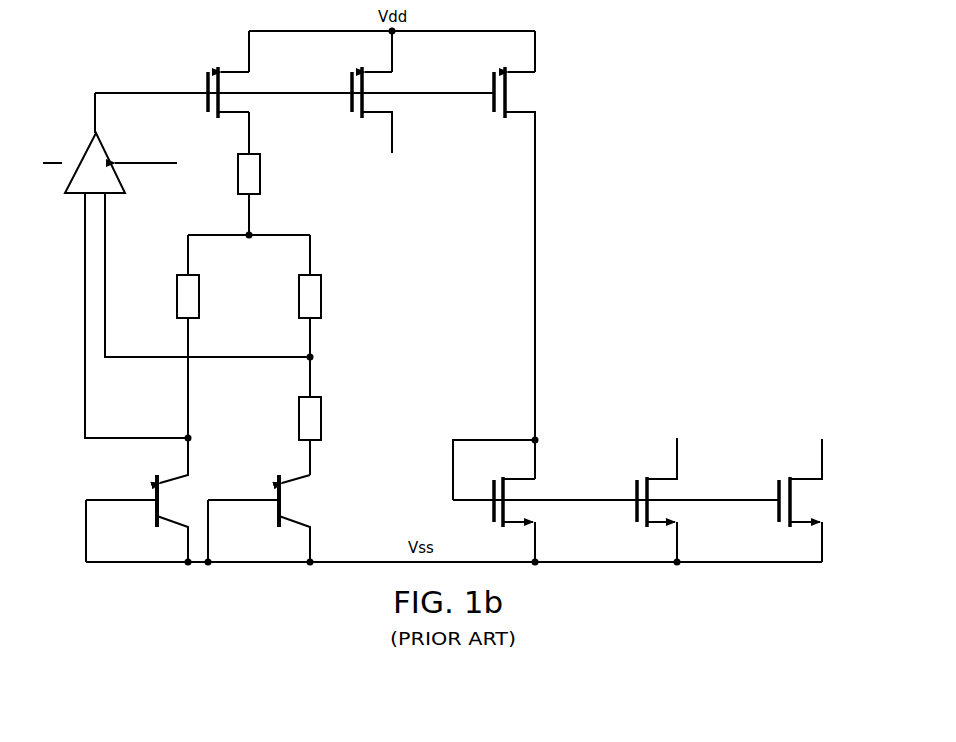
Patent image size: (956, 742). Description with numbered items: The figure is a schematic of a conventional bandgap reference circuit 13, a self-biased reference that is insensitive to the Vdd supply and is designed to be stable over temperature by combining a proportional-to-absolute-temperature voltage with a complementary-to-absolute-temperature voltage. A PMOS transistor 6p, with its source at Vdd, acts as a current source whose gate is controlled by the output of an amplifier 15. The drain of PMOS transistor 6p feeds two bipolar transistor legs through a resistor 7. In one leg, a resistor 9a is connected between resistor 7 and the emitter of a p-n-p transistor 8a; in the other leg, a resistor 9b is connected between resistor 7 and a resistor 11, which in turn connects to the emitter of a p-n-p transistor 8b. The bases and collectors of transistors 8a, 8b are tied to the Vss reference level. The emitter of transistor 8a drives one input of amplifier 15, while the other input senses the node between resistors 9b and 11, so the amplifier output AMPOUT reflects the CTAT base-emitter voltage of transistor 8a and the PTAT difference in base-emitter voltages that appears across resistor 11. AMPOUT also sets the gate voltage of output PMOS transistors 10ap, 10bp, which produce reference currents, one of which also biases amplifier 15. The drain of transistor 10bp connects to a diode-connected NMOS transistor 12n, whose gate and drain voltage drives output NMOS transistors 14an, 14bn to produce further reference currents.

The PMOS transistor 6p is at (207, 80).
The output PMOS transistor 10ap is at (351, 80).
The output PMOS transistor 10bp is at (493, 80).
The resistor 7 is at (238, 175).
The resistor 9a is at (177, 298).
The resistor 9b is at (299, 298).
The resistor 11 is at (299, 420).
The amplifier 15 is at (83, 153).
The p-n-p transistor 8a is at (156, 509).
The p-n-p transistor 8b is at (278, 509).
The NMOS transistor 12n is at (493, 508).
The output NMOS transistor 14an is at (636, 508).
The output NMOS transistor 14bn is at (778, 508).
The bandgap reference circuit 13 is at (702, 108).